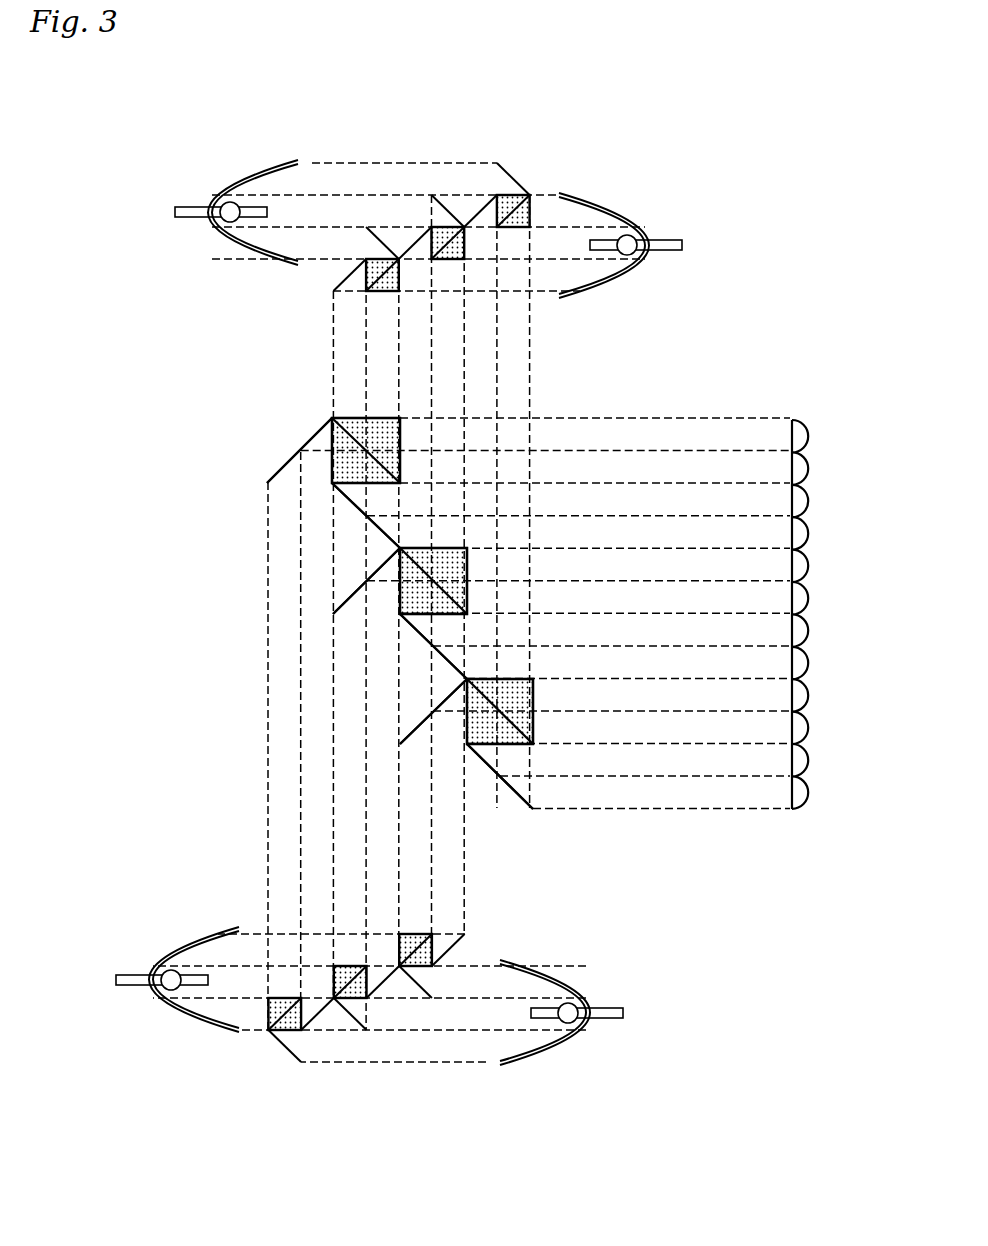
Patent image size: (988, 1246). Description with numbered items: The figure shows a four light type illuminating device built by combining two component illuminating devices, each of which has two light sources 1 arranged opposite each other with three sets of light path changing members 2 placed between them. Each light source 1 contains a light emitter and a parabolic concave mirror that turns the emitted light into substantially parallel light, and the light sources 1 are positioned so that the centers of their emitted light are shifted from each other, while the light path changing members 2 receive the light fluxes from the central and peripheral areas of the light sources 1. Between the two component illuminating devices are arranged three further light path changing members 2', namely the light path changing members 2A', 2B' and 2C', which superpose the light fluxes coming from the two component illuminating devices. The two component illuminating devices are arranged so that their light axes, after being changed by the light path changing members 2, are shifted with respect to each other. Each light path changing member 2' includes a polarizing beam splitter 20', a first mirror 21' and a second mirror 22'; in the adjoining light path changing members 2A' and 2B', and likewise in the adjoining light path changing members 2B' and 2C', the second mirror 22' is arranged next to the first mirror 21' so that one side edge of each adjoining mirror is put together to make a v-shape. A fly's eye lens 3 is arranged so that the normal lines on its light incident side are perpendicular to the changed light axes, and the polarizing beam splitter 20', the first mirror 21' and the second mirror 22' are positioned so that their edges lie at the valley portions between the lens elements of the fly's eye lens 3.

The light source 1 is at (194, 170).
The light path changing member 2 is at (398, 616).
The light path changing member 2' is at (286, 613).
The light path changing member 2A' is at (286, 744).
The light path changing member 2B' is at (253, 613).
The light path changing member 2C' is at (220, 484).
The polarizing beam splitter 20' is at (325, 584).
The first mirror 21' is at (325, 646).
The second mirror 22' is at (292, 581).
The fly's eye lens 3 is at (818, 618).